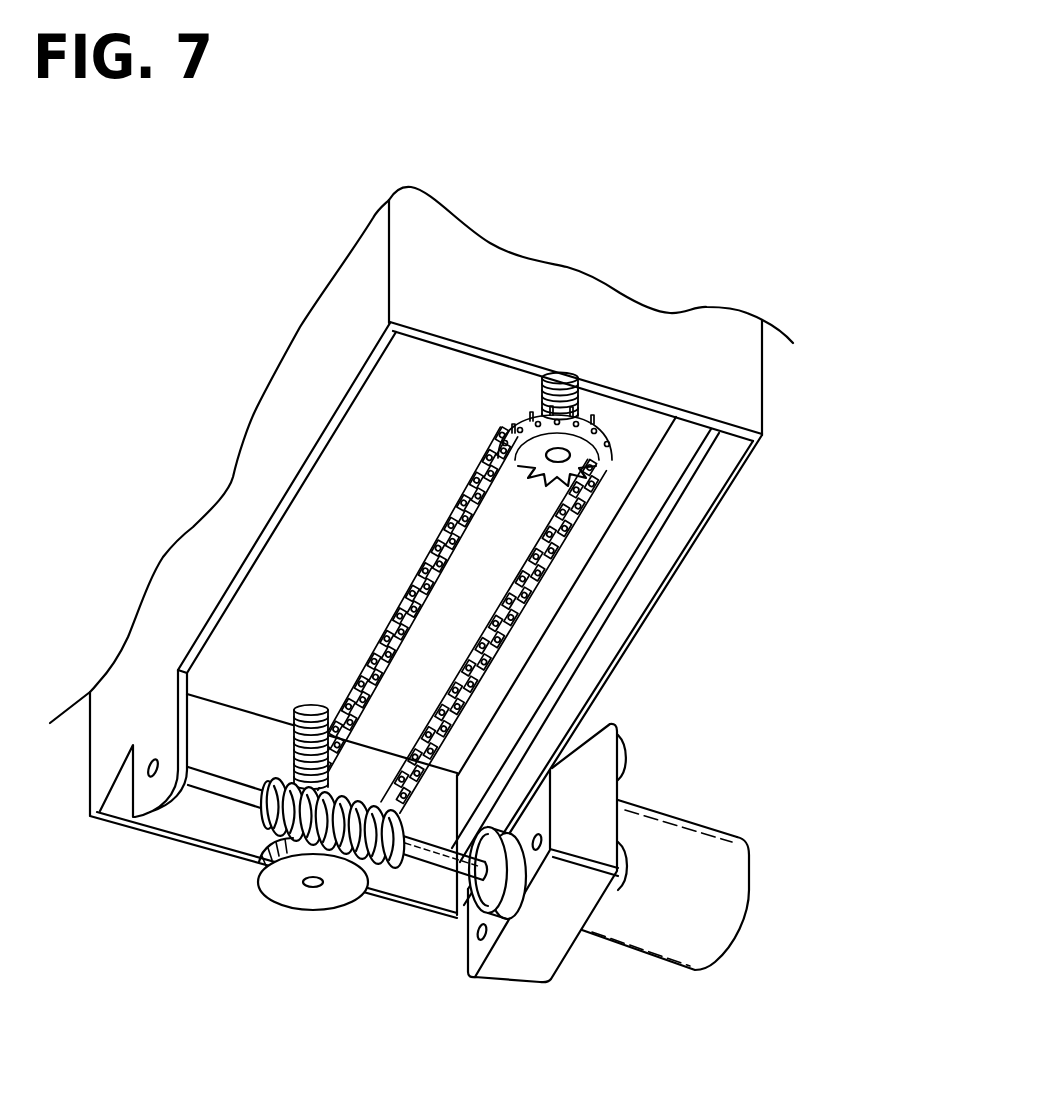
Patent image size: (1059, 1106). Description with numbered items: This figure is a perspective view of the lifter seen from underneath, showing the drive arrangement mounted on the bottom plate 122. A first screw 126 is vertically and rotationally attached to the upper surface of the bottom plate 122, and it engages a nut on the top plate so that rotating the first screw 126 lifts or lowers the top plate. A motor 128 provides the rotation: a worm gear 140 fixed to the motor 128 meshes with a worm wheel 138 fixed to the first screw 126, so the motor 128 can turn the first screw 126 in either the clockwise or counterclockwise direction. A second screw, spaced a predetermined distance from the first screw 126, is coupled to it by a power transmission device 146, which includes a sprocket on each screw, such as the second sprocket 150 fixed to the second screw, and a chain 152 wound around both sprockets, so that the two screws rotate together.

The bottom plate 122 is at (421, 552).
The first screw 126 is at (290, 753).
The motor 128 is at (648, 928).
The worm wheel 138 is at (312, 900).
The worm gear 140 is at (393, 864).
The power transmission device 146 is at (640, 440).
The second sprocket 150 is at (578, 452).
The chain 152 is at (563, 535).